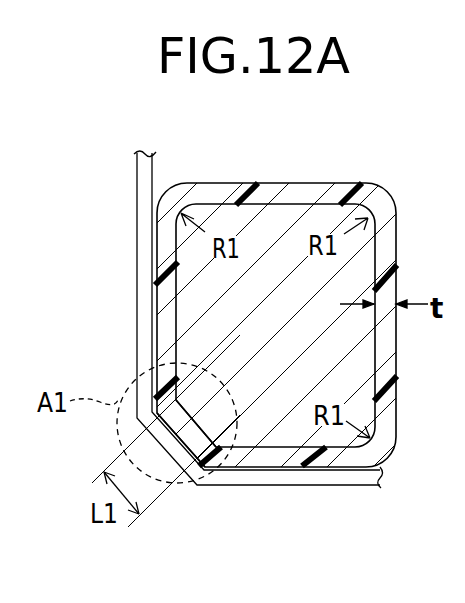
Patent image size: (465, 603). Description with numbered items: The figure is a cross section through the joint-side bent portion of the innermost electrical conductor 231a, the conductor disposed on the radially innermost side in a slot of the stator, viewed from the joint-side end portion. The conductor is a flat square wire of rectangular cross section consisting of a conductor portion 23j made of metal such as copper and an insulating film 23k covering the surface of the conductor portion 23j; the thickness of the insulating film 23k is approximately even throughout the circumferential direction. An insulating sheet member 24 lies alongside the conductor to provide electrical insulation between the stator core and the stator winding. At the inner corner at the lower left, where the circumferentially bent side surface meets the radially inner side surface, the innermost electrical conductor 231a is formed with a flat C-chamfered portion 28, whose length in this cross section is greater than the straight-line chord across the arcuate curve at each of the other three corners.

The insulating sheet member 24 is at (147, 190).
The conductor portion 23j is at (260, 252).
The insulating film 23k is at (312, 192).
The innermost electrical conductor 231a is at (338, 186).
The C-chamfered portion 28 is at (178, 443).